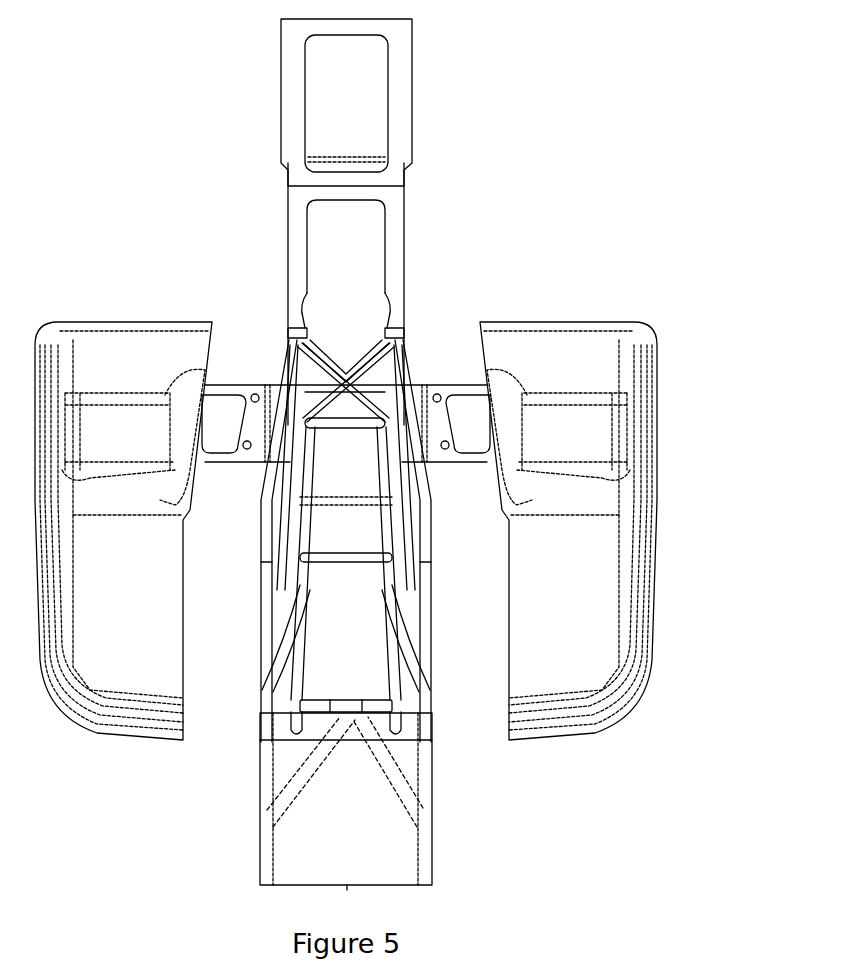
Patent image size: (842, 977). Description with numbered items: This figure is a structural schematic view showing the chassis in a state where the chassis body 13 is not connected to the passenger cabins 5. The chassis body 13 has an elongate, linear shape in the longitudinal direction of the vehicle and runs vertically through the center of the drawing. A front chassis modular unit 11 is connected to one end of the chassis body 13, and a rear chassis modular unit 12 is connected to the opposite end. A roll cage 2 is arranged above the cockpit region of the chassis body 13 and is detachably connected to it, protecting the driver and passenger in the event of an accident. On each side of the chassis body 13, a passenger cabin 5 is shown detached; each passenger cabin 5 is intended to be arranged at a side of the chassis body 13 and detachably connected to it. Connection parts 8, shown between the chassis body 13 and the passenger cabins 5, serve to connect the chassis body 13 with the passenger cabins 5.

The roll cage 2 is at (290, 357).
The passenger cabin 5 is at (127, 363).
The connection part 8 is at (247, 400).
The front chassis modular unit 11 is at (397, 843).
The rear chassis modular unit 12 is at (400, 118).
The chassis body 13 is at (393, 292).